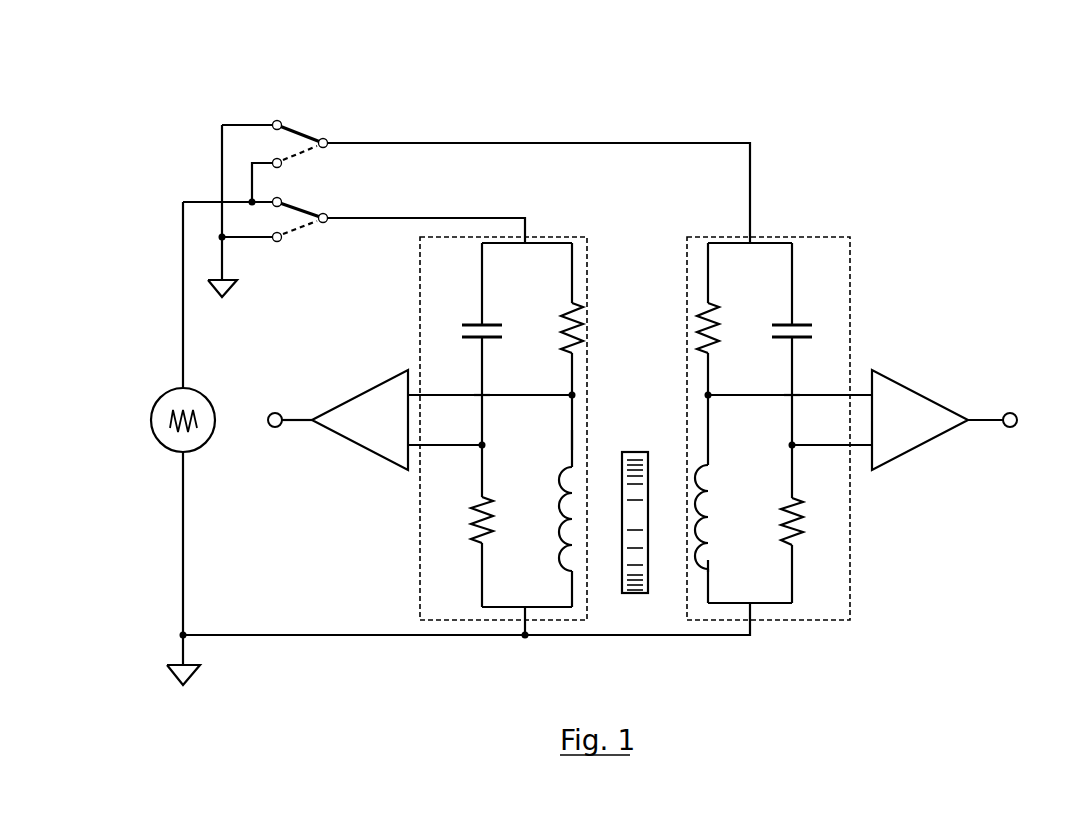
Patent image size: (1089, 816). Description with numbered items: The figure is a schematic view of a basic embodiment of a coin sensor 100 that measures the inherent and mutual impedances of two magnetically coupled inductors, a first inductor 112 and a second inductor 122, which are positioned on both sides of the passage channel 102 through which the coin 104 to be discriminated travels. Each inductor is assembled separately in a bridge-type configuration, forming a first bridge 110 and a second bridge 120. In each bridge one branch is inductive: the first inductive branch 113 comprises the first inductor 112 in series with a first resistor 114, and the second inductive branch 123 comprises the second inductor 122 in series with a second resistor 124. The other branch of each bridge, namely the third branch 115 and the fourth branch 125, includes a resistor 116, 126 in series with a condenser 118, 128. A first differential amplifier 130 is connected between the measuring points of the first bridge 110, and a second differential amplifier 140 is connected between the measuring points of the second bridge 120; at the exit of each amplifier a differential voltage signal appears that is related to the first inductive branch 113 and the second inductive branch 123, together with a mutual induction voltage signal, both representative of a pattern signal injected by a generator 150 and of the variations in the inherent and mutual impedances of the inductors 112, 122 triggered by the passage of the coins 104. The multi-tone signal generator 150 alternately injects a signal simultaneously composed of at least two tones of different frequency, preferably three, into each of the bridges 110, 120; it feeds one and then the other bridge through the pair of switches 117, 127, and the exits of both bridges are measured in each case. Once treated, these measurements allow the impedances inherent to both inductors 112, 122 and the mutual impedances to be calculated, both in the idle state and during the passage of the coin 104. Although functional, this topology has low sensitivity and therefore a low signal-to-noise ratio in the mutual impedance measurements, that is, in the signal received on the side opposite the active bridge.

The coin sensor 100 is at (812, 140).
The passage channel 102 is at (626, 373).
The coin 104 is at (647, 597).
The first bridge 110 is at (418, 562).
The first inductor 112 is at (563, 553).
The first inductive branch 113 is at (568, 441).
The first resistor 114 is at (562, 328).
The third branch 115 is at (480, 378).
The resistor 116 is at (483, 500).
The switch 117 is at (293, 247).
The condenser 118 is at (472, 322).
The second bridge 120 is at (853, 570).
The second inductor 122 is at (705, 557).
The second inductive branch 123 is at (712, 450).
The second resistor 124 is at (714, 310).
The fourth branch 125 is at (788, 382).
The resistor 126 is at (797, 500).
The switch 127 is at (273, 122).
The condenser 128 is at (797, 322).
The first differential amplifier 130 is at (382, 438).
The second differential amplifier 140 is at (913, 432).
The multi-tone signal generator 150 is at (182, 455).